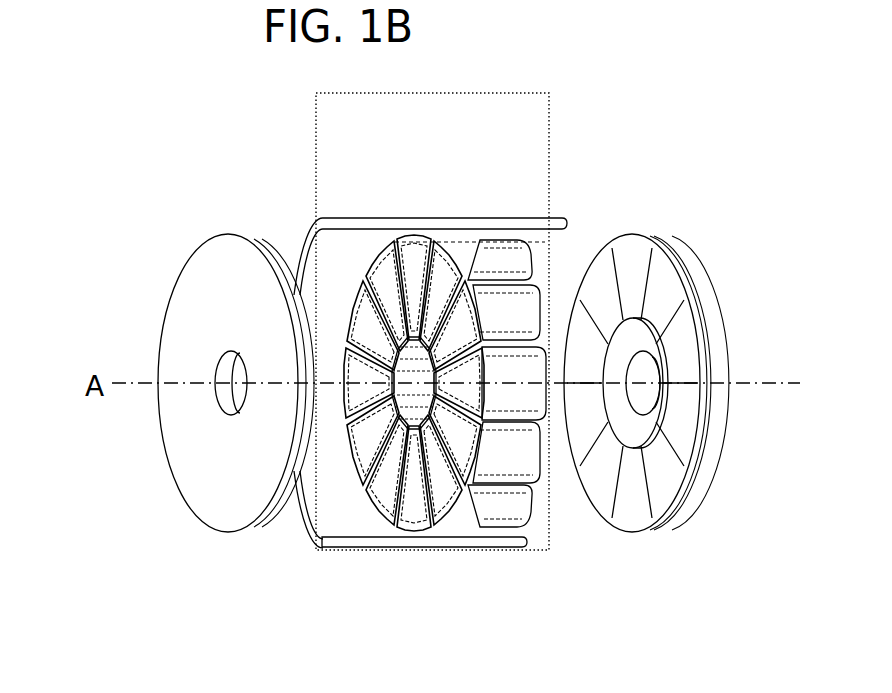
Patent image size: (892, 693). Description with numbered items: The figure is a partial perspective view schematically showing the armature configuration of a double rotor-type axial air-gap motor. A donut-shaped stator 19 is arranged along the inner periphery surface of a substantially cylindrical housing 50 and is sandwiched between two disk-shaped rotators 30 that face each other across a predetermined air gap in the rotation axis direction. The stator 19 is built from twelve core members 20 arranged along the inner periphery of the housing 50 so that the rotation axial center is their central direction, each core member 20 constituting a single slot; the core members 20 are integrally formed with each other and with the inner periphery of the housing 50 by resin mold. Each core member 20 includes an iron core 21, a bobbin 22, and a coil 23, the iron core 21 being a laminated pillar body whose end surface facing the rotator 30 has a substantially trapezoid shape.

The stator 19 is at (313, 133).
The core member 20 is at (445, 326).
The iron core 21 is at (432, 300).
The bobbin 22 is at (443, 247).
The coil 23 is at (507, 348).
The rotator 30 is at (190, 258).
The housing 50 is at (320, 538).